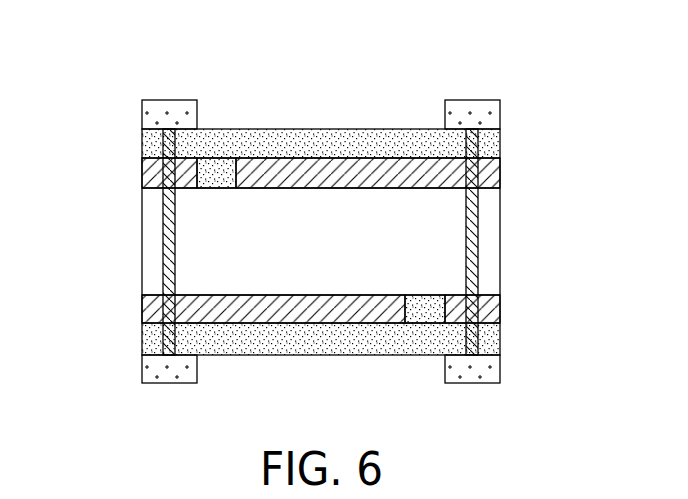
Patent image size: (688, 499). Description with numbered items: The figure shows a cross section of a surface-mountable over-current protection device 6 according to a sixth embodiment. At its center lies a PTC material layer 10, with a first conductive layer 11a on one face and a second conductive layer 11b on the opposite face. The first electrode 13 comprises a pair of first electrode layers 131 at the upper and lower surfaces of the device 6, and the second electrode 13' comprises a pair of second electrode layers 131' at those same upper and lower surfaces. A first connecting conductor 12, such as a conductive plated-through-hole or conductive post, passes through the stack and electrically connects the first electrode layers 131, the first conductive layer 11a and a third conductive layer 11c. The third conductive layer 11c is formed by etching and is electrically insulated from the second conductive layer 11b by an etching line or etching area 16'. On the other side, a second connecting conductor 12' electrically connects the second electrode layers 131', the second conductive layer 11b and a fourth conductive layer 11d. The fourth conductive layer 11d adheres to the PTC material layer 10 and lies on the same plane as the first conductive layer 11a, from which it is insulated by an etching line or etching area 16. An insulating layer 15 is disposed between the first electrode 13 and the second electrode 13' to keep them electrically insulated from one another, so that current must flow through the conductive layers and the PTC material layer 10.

The surface-mountable over-current protection device 6 is at (499, 73).
The PTC material layer 10 is at (497, 272).
The first conductive layer 11a is at (387, 178).
The second conductive layer 11b is at (260, 316).
The third conductive layer 11c is at (497, 306).
The fourth conductive layer 11d is at (163, 172).
The first connecting conductor 12 is at (515, 242).
The second connecting conductor 12' is at (127, 242).
The first electrode 13 is at (470, 277).
The second electrode 13' is at (167, 277).
The first electrode layer 131 is at (510, 241).
The second electrode layer 131' is at (132, 240).
The insulating layer 15 is at (289, 148).
The etching line or etching area 16 is at (218, 119).
The etching line or etching area 16' is at (425, 364).